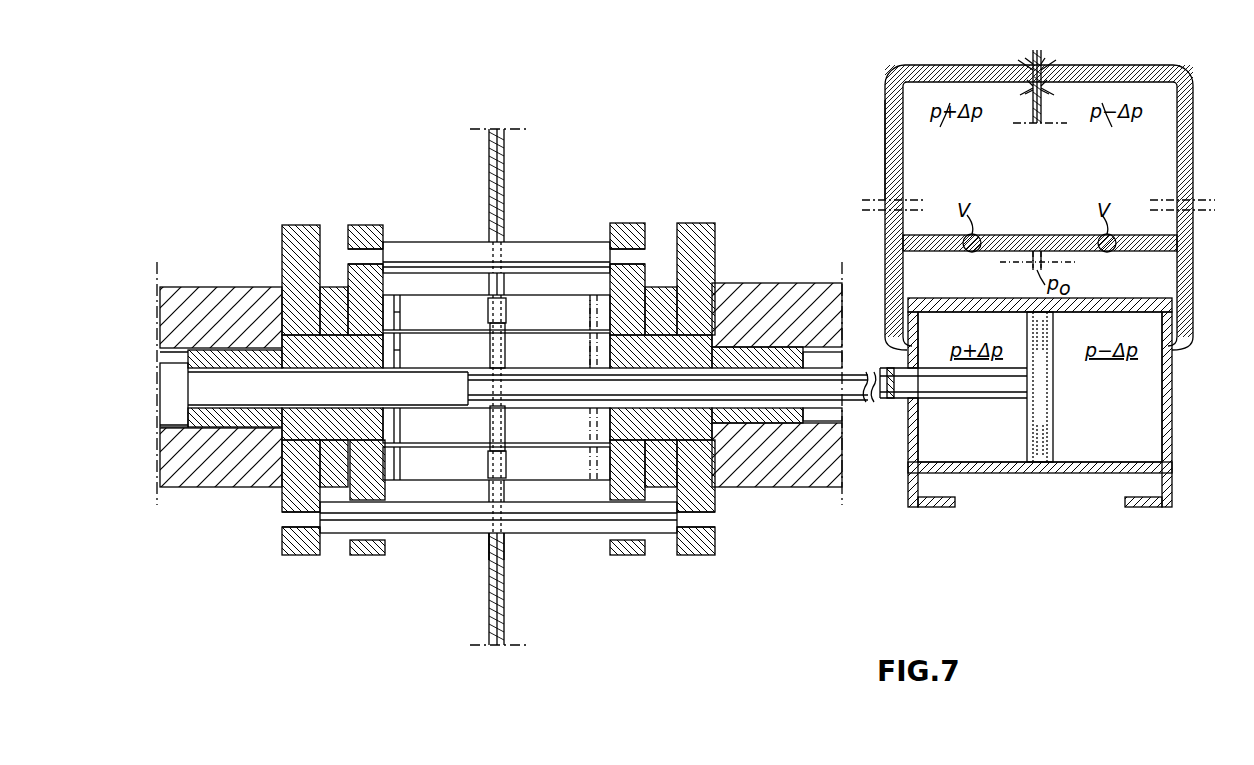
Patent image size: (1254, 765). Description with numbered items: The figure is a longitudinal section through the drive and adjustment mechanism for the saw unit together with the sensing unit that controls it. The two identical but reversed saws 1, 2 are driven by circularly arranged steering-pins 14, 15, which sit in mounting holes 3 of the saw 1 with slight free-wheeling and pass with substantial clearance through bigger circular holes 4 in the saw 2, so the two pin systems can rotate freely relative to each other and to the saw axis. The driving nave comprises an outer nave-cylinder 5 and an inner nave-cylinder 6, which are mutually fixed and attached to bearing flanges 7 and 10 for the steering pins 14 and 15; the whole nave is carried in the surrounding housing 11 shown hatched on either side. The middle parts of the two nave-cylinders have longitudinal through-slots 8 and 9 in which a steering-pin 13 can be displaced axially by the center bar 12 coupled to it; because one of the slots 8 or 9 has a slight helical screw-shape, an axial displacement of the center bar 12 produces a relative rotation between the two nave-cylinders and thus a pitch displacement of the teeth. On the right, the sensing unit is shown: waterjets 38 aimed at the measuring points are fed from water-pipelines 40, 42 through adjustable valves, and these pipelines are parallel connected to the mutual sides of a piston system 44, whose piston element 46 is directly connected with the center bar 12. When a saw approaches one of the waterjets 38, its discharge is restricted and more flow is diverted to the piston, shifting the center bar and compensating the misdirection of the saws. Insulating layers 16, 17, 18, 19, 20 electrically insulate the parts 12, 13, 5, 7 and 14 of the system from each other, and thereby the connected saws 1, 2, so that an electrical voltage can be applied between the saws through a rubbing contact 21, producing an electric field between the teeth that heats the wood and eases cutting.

The saw 1 is at (489, 165).
The saw 2 is at (504, 150).
The mounting hole 3 is at (504, 540).
The circular hole 4 is at (489, 545).
The outer nave-cylinder 5 is at (400, 312).
The inner nave-cylinder 6 is at (400, 350).
The bearing flange 7 is at (364, 225).
The longitudinal through-slot 8 is at (496, 387).
The longitudinal through-slot 9 is at (496, 388).
The bearing flange 10 is at (297, 225).
The housing frame 11 is at (207, 287).
The center bar 12 is at (468, 386).
The steering-pin 13 is at (506, 313).
The steering-pin 14 is at (437, 242).
The steering-pin 15 is at (442, 533).
The insulating layer 16 is at (506, 347).
The insulating layer 17 is at (582, 368).
The insulating layer 18 is at (575, 332).
The insulating layer 19 is at (890, 368).
The insulating layer 20 is at (504, 183).
The rubbing contact 21 is at (890, 398).
The waterjet 38 is at (1023, 54).
The water-pipeline 40 is at (1206, 148).
The water-pipeline 42 is at (875, 152).
The piston system 44 is at (1007, 487).
The piston element 46 is at (1055, 432).